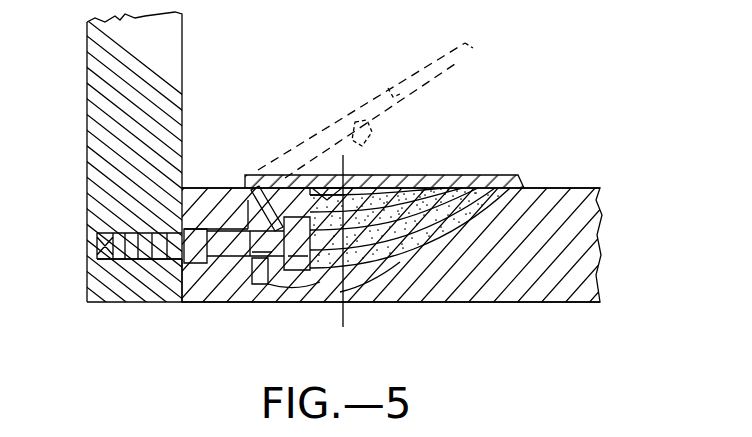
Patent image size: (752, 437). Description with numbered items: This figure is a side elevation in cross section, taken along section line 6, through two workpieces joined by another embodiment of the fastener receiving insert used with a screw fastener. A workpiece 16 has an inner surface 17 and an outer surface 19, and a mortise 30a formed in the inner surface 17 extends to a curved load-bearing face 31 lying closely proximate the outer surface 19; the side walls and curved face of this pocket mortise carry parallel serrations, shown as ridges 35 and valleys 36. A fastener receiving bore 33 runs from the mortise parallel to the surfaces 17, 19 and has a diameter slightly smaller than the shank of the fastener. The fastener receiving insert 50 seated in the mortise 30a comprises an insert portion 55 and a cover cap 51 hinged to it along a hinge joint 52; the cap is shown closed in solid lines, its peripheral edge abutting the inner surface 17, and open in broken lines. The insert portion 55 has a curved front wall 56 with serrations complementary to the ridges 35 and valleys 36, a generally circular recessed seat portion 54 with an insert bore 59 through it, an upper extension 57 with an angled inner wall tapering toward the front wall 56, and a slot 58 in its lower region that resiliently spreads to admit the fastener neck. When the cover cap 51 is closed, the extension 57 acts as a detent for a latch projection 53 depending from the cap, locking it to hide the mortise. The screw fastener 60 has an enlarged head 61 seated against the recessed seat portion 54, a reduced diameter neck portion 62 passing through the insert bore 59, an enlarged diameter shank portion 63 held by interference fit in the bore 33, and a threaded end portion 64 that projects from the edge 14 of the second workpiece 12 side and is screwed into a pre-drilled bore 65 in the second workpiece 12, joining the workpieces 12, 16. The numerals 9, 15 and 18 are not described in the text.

The section line 6- 6 is at (343, 155).
The flexible blade 9 is at (297, 188).
The second workpiece 12 is at (95, 68).
The edge of member 12 14 is at (97, 302).
The wall face 15 is at (87, 152).
The workpiece 16 is at (548, 298).
The inner surface 17 is at (568, 188).
The bore 18 is at (176, 262).
The outer surface 19 is at (462, 302).
The mortise 30a is at (490, 190).
The curved load-bearing face 31 is at (232, 212).
The fastener receiving bore 33 is at (226, 258).
The ridges 35 is at (443, 196).
The valleys 36 is at (364, 268).
The fastener receiving insert 50 is at (273, 164).
The cover cap 51 is at (389, 85).
The hinge joint 52 is at (258, 186).
The latch projection 53 is at (423, 188).
The recessed seat portion 54 is at (285, 188).
The insert portion 55 is at (347, 186).
The curved front wall 56 is at (253, 262).
The upper extension 57 is at (366, 188).
The slot 58 is at (262, 280).
The insert bore 59 is at (297, 285).
The screw fastener 60 is at (212, 220).
The enlarged head 61 is at (297, 243).
The neck portion 62 is at (261, 243).
The shank portion 63 is at (195, 264).
The threaded end portion 64 is at (134, 298).
The pre-drilled bore 65 is at (107, 250).